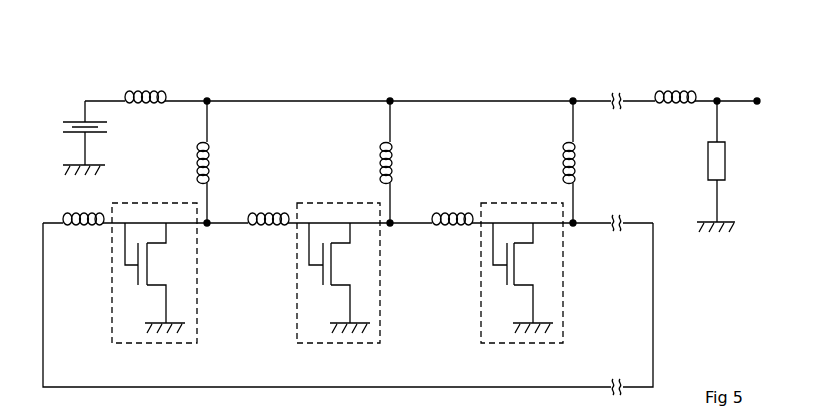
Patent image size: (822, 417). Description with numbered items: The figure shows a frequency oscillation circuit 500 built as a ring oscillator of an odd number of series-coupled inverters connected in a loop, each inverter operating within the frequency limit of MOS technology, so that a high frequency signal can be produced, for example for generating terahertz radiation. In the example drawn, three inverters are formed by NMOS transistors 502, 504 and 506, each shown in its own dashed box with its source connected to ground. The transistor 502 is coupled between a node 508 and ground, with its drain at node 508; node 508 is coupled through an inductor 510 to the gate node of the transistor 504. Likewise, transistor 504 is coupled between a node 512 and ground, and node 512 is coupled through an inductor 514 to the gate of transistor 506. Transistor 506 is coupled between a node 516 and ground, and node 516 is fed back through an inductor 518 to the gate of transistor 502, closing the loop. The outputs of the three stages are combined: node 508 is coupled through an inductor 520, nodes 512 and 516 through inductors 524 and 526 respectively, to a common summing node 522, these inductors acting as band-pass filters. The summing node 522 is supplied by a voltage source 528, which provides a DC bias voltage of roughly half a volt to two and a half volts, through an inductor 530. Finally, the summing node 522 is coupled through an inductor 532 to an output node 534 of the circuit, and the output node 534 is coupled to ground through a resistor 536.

The frequency oscillation circuit 500 is at (622, 50).
The NMOS transistor 502 is at (197, 293).
The NMOS transistor 504 is at (380, 293).
The NMOS transistor 506 is at (563, 293).
The node 508 is at (210, 221).
The inductor 510 is at (274, 214).
The node 512 is at (393, 221).
The inductor 514 is at (457, 214).
The node 516 is at (575, 221).
The inductor 518 is at (83, 228).
The inductor 520 is at (212, 160).
The summing node 522 is at (394, 98).
The inductor 524 is at (392, 160).
The inductor 526 is at (577, 162).
The voltage source 528 is at (63, 123).
The inductor 530 is at (145, 86).
The inductor 532 is at (673, 84).
The output node 534 is at (756, 97).
The resistor 536 is at (720, 163).